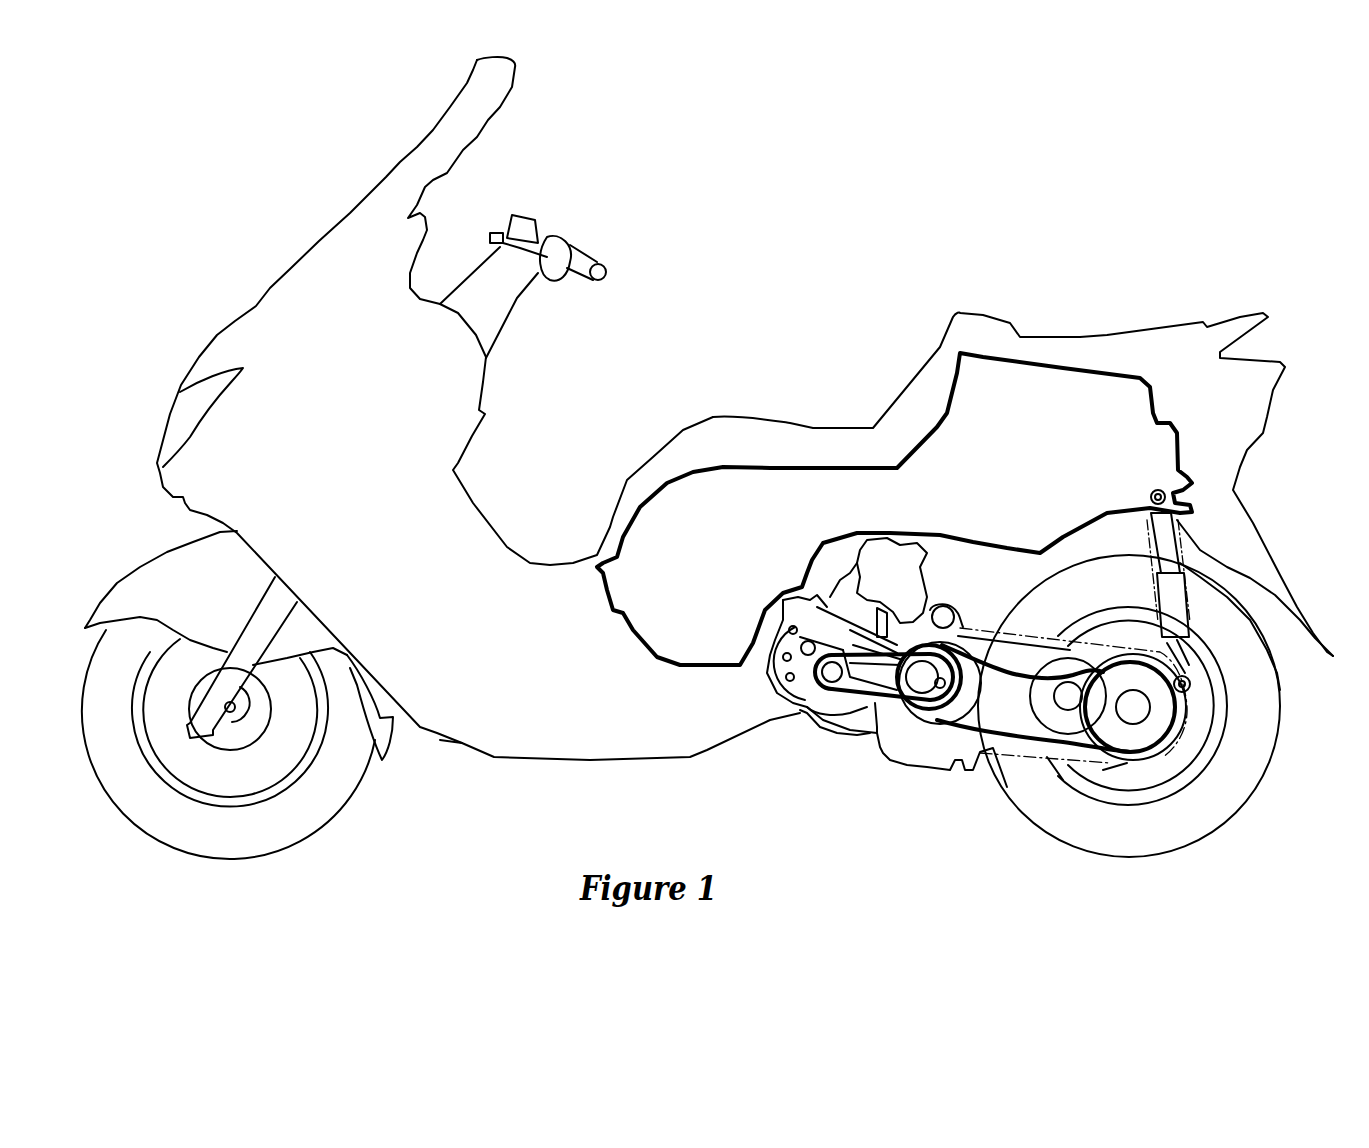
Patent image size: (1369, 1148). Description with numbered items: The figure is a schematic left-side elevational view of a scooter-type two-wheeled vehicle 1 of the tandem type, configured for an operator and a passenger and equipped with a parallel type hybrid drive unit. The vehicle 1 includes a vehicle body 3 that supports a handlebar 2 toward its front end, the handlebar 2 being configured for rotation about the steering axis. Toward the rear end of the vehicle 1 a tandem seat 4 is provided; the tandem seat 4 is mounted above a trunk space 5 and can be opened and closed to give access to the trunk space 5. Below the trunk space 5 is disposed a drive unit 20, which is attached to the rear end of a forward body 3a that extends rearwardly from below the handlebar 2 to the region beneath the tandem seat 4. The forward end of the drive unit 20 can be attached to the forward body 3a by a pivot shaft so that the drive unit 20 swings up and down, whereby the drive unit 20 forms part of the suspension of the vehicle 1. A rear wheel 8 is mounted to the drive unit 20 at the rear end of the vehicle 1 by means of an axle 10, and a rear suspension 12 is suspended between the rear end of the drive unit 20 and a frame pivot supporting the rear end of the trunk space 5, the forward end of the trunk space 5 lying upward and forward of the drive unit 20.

The scooter-type two-wheeled vehicle 1 is at (762, 285).
The handlebar 2 is at (557, 232).
The vehicle body 3 is at (538, 558).
The forward body 3a is at (475, 725).
The tandem seat 4 is at (850, 427).
The trunk space 5 is at (1063, 365).
The rear wheel 8 is at (1262, 728).
The axle 10 is at (1137, 712).
The rear suspension 12 is at (1170, 597).
The drive unit 20 is at (847, 743).